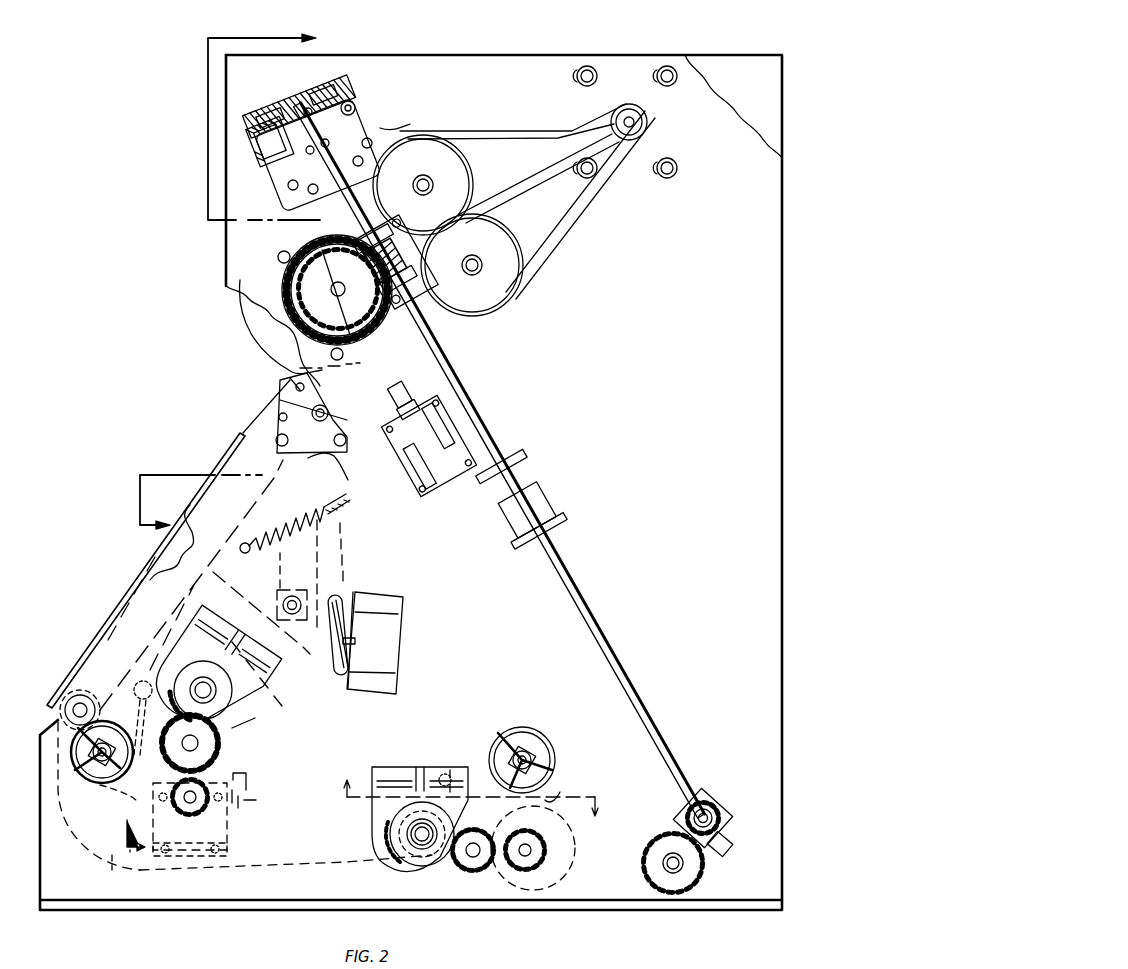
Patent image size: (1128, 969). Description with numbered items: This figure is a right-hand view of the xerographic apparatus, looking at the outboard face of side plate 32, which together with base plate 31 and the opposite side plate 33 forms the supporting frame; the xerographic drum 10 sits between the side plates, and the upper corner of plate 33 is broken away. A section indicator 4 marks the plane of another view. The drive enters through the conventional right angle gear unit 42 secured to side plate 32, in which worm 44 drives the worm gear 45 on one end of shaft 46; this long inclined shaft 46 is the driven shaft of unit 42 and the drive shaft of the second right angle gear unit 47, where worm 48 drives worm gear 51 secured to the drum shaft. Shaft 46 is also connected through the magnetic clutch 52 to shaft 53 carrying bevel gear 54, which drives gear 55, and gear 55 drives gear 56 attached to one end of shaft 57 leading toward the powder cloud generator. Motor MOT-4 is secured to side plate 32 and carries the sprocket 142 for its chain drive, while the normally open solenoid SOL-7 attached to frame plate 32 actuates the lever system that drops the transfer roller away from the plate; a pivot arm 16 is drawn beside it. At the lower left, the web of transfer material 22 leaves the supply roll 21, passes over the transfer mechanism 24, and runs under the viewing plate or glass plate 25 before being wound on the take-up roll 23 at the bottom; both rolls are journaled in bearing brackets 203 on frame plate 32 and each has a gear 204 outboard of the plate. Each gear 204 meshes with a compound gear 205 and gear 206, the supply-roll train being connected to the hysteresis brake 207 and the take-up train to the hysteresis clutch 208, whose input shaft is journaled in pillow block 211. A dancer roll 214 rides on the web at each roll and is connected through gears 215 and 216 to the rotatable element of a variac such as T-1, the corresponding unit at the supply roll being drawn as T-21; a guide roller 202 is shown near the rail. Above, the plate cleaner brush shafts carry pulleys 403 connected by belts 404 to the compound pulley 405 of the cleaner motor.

The section line 4- 4 is at (235, 280).
The xerographic drum 10 is at (248, 322).
The pivot arm 16 is at (338, 426).
The supply roll 21 is at (205, 680).
The web of transfer material 22 is at (190, 592).
The take-up roll 23 is at (400, 834).
The transfer mechanism 24 is at (278, 386).
The viewing plate or glass plate 25 is at (218, 470).
The base plate 31 is at (597, 903).
The side plate 32 is at (770, 176).
The side plate 33 is at (740, 55).
The right angle gear unit 42 is at (403, 124).
The worm 44 is at (356, 104).
The worm gear 45 is at (372, 122).
The shaft 46 is at (352, 210).
The second right angle gear unit 47 is at (300, 250).
The worm 48 is at (404, 262).
The worm gear 51 is at (283, 282).
The magnetic clutch 52 is at (497, 520).
The shaft 53 is at (530, 538).
The bevel gear 54 is at (728, 842).
The gear 55 is at (707, 808).
The gear 56 is at (650, 848).
The shaft 57 is at (680, 864).
The sprocket 142 is at (330, 655).
The roller 202 is at (62, 702).
The bearing brackets 203 is at (272, 682).
The gear 204 is at (244, 720).
The compound gear 205 is at (220, 745).
The gear 206 is at (208, 808).
The hysteresis brake 207 is at (259, 801).
The hysteresis clutch 208 is at (562, 848).
The pillow block 211 is at (246, 782).
The dancer roll 214 is at (138, 688).
The gear 215 is at (348, 814).
The gear 216 is at (564, 762).
The pulleys 403 is at (465, 172).
The belts 404 is at (490, 136).
The compound pulley 405 is at (646, 122).
The normally open solenoid SOL-7 is at (412, 486).
The motor MOT-4 is at (400, 641).
The variac T-1 is at (545, 735).
The timing wheel T-21 is at (120, 716).